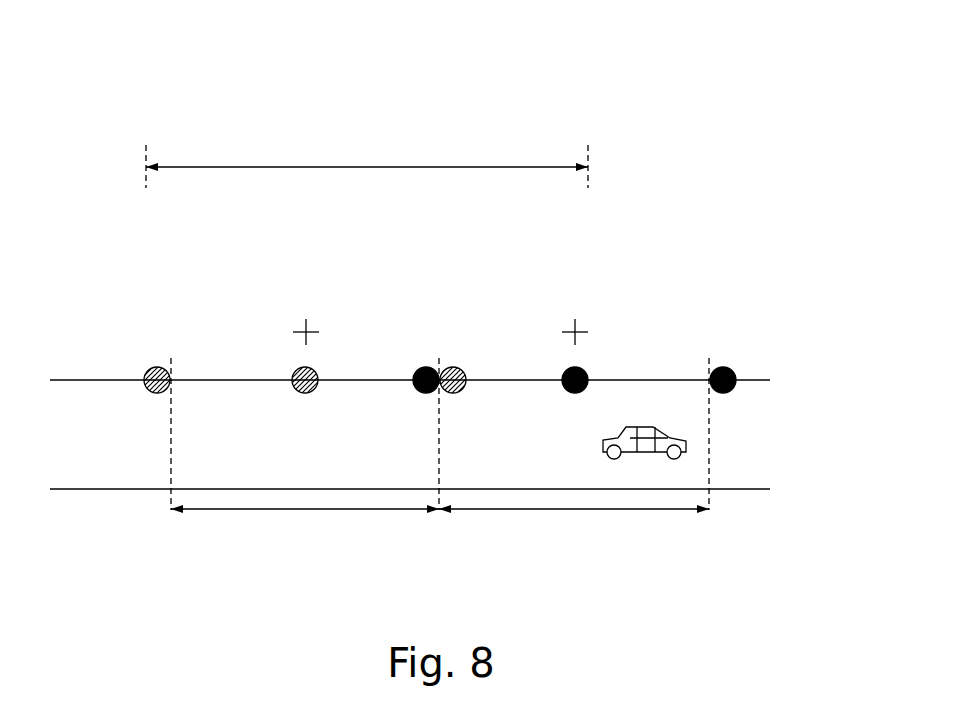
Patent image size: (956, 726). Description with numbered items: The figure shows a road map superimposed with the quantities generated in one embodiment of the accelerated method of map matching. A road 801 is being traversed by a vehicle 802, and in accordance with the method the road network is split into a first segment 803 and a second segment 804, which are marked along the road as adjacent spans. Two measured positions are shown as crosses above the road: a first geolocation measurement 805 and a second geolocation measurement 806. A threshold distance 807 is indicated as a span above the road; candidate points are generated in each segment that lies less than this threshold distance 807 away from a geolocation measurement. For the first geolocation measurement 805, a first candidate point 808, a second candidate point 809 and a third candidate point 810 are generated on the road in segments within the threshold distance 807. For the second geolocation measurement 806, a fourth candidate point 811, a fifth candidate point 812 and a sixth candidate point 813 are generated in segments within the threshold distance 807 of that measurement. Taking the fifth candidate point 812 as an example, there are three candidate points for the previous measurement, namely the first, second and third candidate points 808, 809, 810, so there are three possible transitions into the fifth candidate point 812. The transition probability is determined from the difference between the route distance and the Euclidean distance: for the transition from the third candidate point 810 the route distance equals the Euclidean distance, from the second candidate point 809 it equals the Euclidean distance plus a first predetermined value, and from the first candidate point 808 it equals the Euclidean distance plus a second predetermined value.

The road 801 is at (100, 470).
The vehicle 802 is at (628, 465).
The first segment 803 is at (292, 513).
The second segment 804 is at (683, 515).
The first geolocation measurement 805 is at (297, 322).
The second geolocation measurement 806 is at (588, 320).
The threshold distance 807 is at (372, 158).
The first candidate point 808 is at (147, 363).
The second candidate point 809 is at (300, 400).
The third candidate point 810 is at (458, 402).
The fourth candidate point 811 is at (423, 362).
The fifth candidate point 812 is at (597, 363).
The sixth candidate point 813 is at (742, 365).